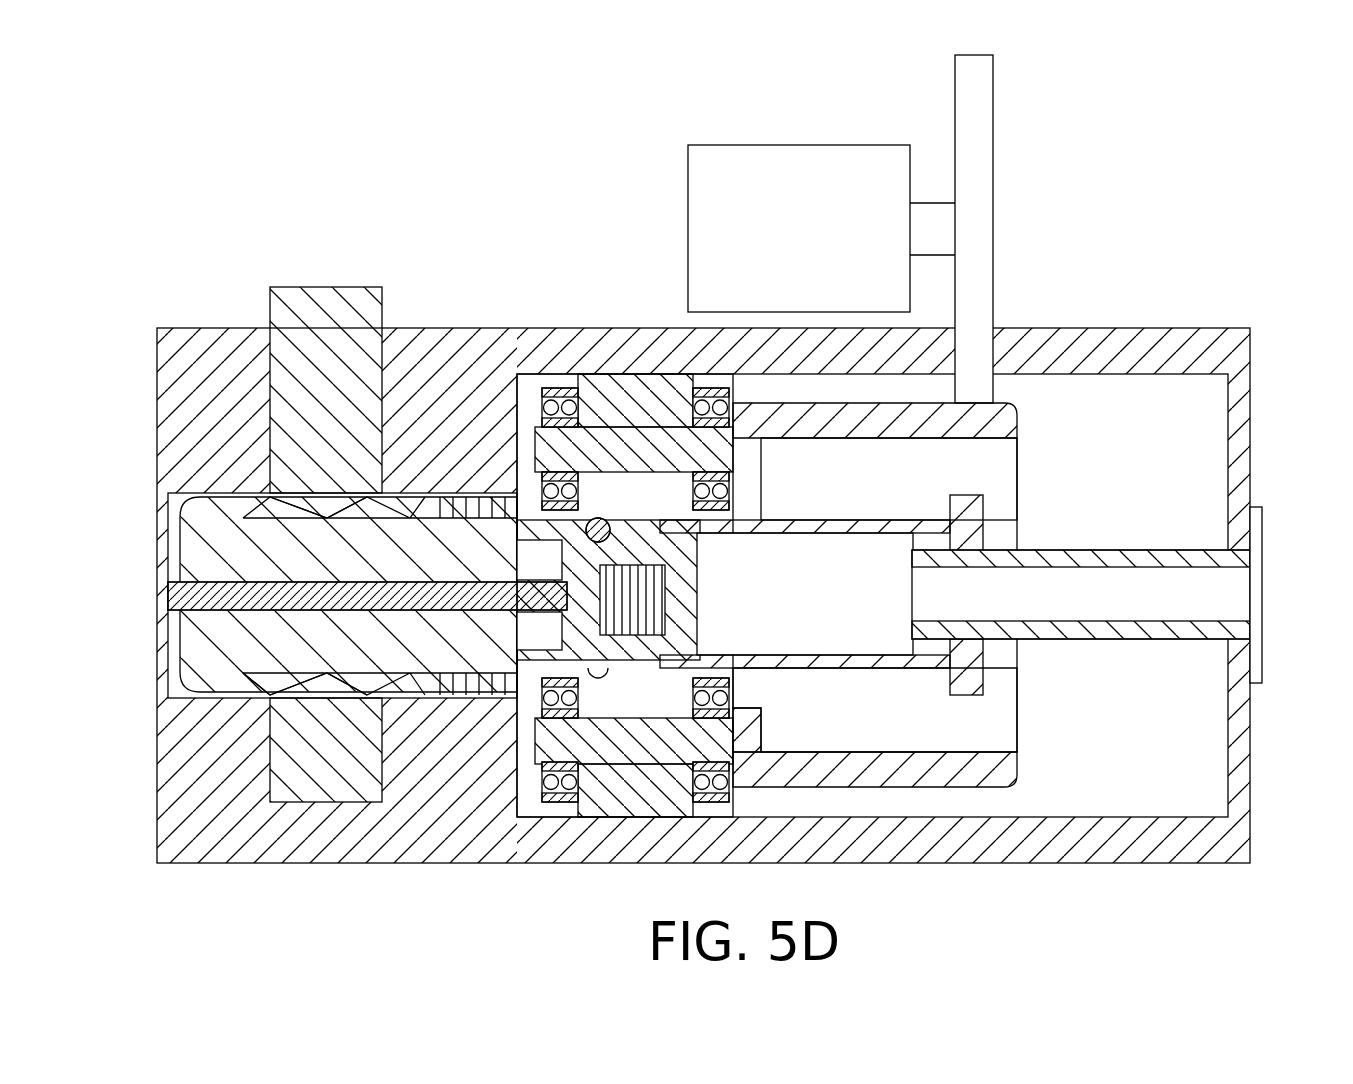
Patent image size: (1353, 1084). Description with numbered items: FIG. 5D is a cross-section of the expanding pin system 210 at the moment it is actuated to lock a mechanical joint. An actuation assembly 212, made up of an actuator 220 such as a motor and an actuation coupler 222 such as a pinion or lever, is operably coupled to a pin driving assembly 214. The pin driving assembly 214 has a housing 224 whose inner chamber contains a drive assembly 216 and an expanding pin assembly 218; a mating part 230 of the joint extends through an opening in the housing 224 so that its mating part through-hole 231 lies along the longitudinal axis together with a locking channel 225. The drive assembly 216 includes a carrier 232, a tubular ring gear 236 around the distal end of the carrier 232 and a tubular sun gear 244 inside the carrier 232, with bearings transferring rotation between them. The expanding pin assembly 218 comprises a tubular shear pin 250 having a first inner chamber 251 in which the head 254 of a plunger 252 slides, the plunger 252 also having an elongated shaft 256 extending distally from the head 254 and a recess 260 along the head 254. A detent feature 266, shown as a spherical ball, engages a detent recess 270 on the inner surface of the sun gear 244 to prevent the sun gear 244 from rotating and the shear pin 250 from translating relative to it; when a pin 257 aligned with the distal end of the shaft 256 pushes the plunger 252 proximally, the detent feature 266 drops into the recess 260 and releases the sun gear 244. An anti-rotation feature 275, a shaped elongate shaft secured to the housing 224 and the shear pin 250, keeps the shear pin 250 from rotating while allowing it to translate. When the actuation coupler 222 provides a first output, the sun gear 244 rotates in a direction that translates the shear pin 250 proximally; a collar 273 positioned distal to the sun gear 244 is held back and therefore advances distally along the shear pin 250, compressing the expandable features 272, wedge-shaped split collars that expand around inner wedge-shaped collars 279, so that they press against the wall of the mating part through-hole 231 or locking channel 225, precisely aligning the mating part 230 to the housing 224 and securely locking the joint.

The expanding pin system 210 is at (1199, 133).
The actuation assembly 212 is at (865, 106).
The pin driving assembly 214 is at (1037, 733).
The drive assembly 216 is at (1017, 461).
The expanding pin assembly 218 is at (785, 680).
The actuator 220 is at (765, 160).
The actuation coupler 222 is at (983, 267).
The housing 224 is at (1250, 388).
The locking channel 225 is at (210, 695).
The mating part 230 is at (340, 318).
The mating part through-hole 231 is at (345, 490).
The carrier 232 is at (993, 423).
The ring gear 236 is at (673, 793).
The sun gear 244 is at (632, 700).
The shear pin 250 is at (193, 618).
The first inner chamber 251 is at (845, 628).
The plunger 252 is at (332, 687).
The head 254 is at (487, 683).
The elongated shaft 256 is at (253, 592).
The pin 257 is at (190, 598).
The recess 260 is at (630, 548).
The detent feature 266 is at (596, 518).
The detent recess 270 is at (622, 548).
The expandable features 272 is at (287, 685).
The collar 273 is at (470, 606).
The anti-rotation feature 275 is at (1195, 548).
The inner wedge-shaped collars 279 is at (210, 693).